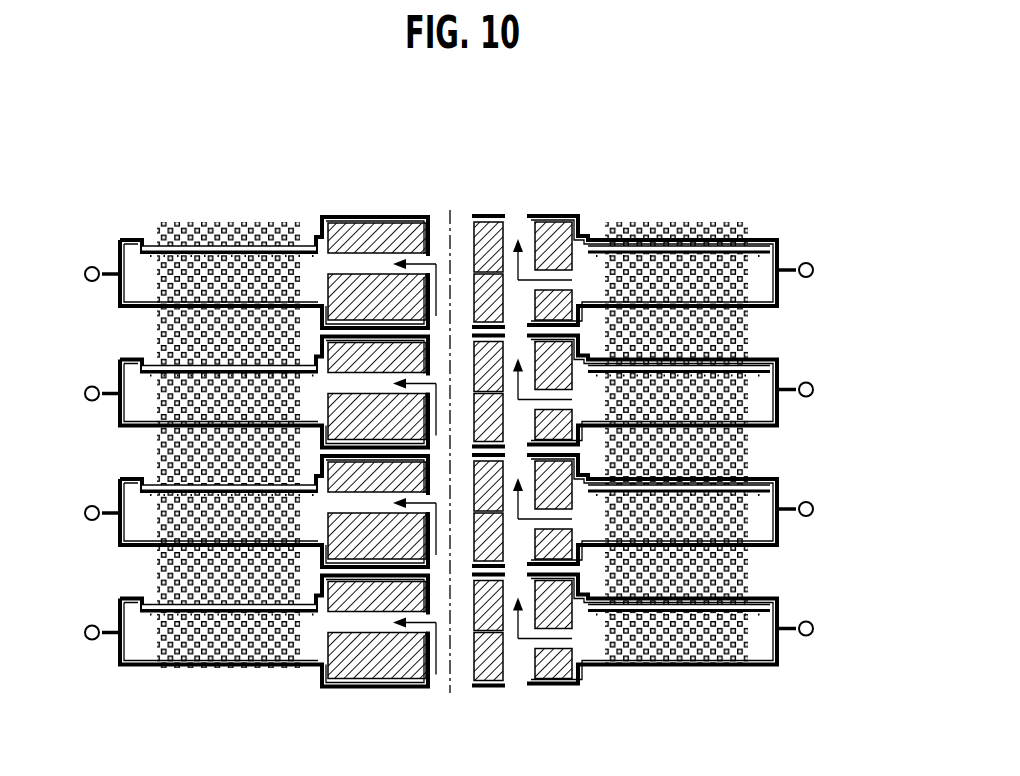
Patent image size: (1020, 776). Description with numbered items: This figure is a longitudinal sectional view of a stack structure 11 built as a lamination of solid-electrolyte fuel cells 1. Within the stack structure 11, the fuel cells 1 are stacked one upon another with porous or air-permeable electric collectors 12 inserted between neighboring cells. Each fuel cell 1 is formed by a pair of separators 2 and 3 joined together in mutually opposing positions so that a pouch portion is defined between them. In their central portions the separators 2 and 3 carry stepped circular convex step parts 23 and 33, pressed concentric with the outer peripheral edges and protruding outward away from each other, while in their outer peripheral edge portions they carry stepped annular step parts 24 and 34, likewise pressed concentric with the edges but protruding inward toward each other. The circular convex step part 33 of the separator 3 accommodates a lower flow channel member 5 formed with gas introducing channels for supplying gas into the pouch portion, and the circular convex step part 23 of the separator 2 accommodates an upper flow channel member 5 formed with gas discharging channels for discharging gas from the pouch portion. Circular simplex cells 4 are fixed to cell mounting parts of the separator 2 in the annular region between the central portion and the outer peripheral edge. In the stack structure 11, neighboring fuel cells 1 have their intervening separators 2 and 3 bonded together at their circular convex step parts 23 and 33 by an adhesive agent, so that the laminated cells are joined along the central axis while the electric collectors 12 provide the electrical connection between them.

The solid-electrolyte fuel cell 1 is at (832, 243).
The separator 2 is at (753, 228).
The separator 3 is at (748, 668).
The circular simplex cell 4 is at (150, 240).
The flow channel member 5 is at (370, 236).
The stack structure 11 is at (758, 138).
The electric collector 12 is at (160, 325).
The circular convex step part 23 is at (585, 352).
The annular step part 24 is at (120, 255).
The circular convex step part 33 is at (585, 308).
The annular step part 34 is at (122, 650).